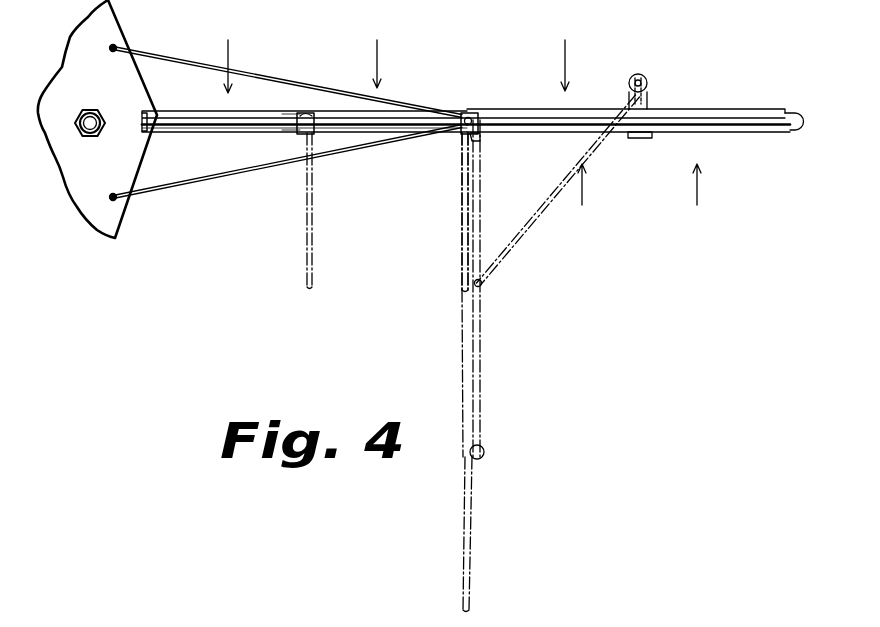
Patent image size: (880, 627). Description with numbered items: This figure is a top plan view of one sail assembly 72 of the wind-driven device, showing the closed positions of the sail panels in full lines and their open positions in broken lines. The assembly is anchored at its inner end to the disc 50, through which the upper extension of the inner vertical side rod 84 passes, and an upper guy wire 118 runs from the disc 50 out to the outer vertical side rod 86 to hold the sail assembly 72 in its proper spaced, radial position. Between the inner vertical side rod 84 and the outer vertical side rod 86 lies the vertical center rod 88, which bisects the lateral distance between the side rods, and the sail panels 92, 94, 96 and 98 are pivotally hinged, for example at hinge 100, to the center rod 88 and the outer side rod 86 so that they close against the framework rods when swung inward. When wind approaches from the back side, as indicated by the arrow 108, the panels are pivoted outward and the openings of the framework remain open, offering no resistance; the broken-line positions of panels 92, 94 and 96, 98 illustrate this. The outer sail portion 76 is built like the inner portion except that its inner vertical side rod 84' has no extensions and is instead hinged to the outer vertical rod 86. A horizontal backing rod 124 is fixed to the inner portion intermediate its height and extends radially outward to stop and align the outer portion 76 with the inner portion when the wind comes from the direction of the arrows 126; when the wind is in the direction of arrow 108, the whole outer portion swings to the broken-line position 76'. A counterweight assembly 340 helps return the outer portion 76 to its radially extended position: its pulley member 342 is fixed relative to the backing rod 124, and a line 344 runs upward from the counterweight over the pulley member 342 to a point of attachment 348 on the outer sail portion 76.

The disc 50 is at (106, 91).
The upper guy wire 118 is at (210, 56).
The arrow 108 is at (228, 51).
The hinge 100 is at (305, 112).
The inner vertical side rod 84 is at (131, 136).
The inner vertical side rod 84' is at (494, 146).
The sail panel 92 is at (222, 133).
The sail panel 94 is at (357, 135).
The vertical center rod 88 is at (279, 132).
The outer vertical side rod 86 is at (466, 112).
The sail assembly 72 is at (529, 84).
The horizontal backing rod 124 is at (688, 108).
The outer sail portion 76 is at (772, 106).
The broken line position of outer sail portion 76' is at (493, 366).
The counterweight assembly 340 is at (641, 78).
The pulley member 342 is at (650, 92).
The line 344 is at (645, 134).
The point of attachment 348 is at (490, 285).
The arrows 126 is at (582, 200).
The sail panel 96 is at (460, 221).
The sail panel 98 is at (460, 221).